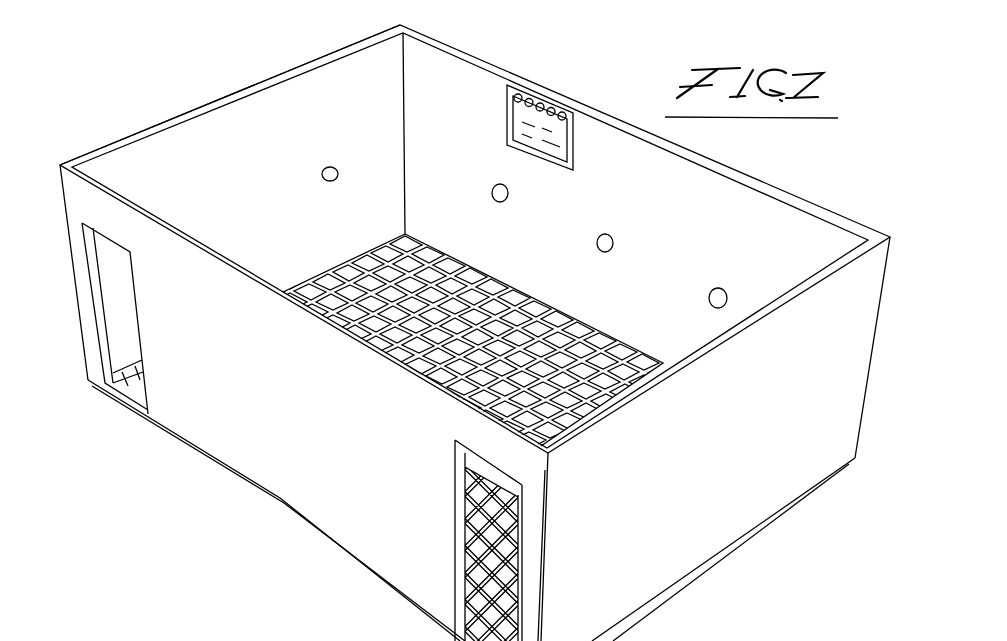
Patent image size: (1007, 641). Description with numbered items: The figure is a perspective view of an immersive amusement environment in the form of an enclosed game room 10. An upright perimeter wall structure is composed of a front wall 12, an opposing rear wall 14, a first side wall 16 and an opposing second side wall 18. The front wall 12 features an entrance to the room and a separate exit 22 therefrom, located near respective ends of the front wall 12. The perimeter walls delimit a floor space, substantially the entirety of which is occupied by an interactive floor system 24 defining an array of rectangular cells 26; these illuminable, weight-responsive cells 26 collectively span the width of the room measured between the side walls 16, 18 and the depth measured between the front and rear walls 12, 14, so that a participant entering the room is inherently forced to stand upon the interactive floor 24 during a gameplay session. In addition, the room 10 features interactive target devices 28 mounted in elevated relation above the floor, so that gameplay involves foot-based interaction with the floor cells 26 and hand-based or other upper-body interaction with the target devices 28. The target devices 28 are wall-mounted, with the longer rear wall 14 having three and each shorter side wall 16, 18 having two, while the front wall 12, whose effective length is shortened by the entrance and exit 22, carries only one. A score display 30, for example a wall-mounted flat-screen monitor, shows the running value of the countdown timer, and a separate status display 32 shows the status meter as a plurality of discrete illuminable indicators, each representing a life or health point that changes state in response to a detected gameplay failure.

The enclosed game room 10 is at (146, 106).
The front wall 12 is at (260, 463).
The rear wall 14 is at (420, 67).
The first side wall 16 is at (112, 165).
The second side wall 18 is at (850, 348).
The exit 22 is at (120, 307).
The interactive floor system 24 is at (583, 338).
The rectangular cells 26 is at (488, 328).
The interactive target devices 28 is at (339, 175).
The score display 30 is at (522, 140).
The status display 32 is at (510, 98).